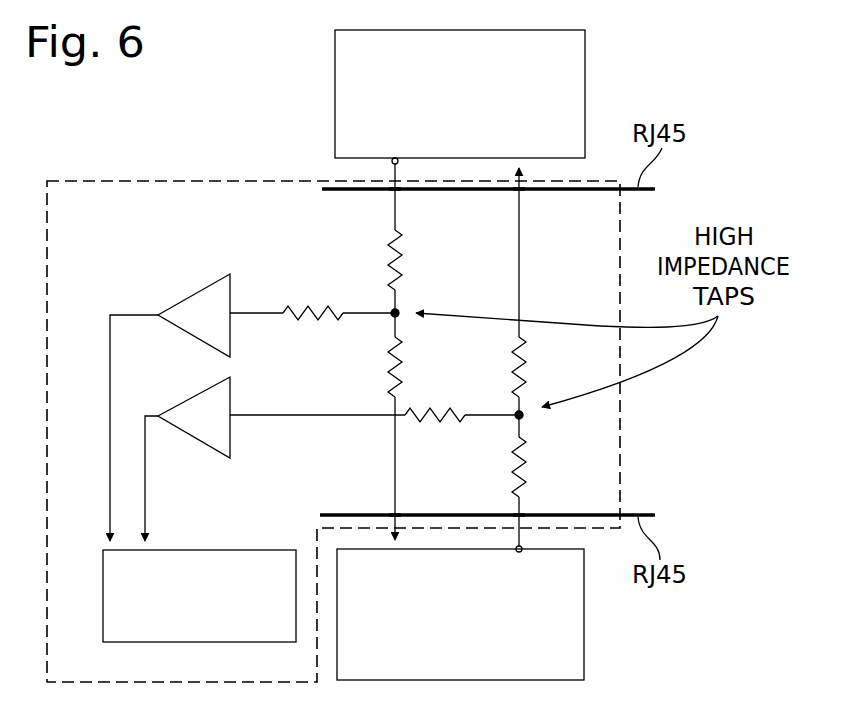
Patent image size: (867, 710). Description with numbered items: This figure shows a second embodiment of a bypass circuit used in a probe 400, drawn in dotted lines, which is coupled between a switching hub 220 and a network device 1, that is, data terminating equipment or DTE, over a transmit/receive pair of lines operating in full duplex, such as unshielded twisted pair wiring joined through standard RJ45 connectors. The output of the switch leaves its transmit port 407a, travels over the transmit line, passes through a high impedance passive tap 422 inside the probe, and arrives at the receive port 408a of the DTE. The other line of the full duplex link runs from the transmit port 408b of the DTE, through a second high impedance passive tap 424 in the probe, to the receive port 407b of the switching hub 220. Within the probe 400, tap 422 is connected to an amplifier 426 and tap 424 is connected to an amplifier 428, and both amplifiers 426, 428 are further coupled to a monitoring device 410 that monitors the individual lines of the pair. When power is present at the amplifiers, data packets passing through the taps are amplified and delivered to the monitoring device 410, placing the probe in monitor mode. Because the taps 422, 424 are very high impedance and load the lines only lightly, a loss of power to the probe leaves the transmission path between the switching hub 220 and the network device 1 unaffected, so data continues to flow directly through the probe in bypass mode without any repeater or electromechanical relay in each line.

The switching hub 220 is at (563, 64).
The probe 400 is at (97, 215).
The transmit port (TX) of the switch 407a is at (389, 194).
The receive port (RX) of the switching hub 407b is at (525, 194).
The receive port (RX) of the DTE 408a is at (389, 510).
The transmit port (TX) of the DTE 408b is at (525, 510).
The high impedance passive tap 422 is at (398, 311).
The high impedance passive tap 424 is at (521, 418).
The amplifier 426 is at (223, 326).
The amplifier 428 is at (223, 430).
The monitoring device 410 is at (290, 630).
The network device 1 is at (585, 605).